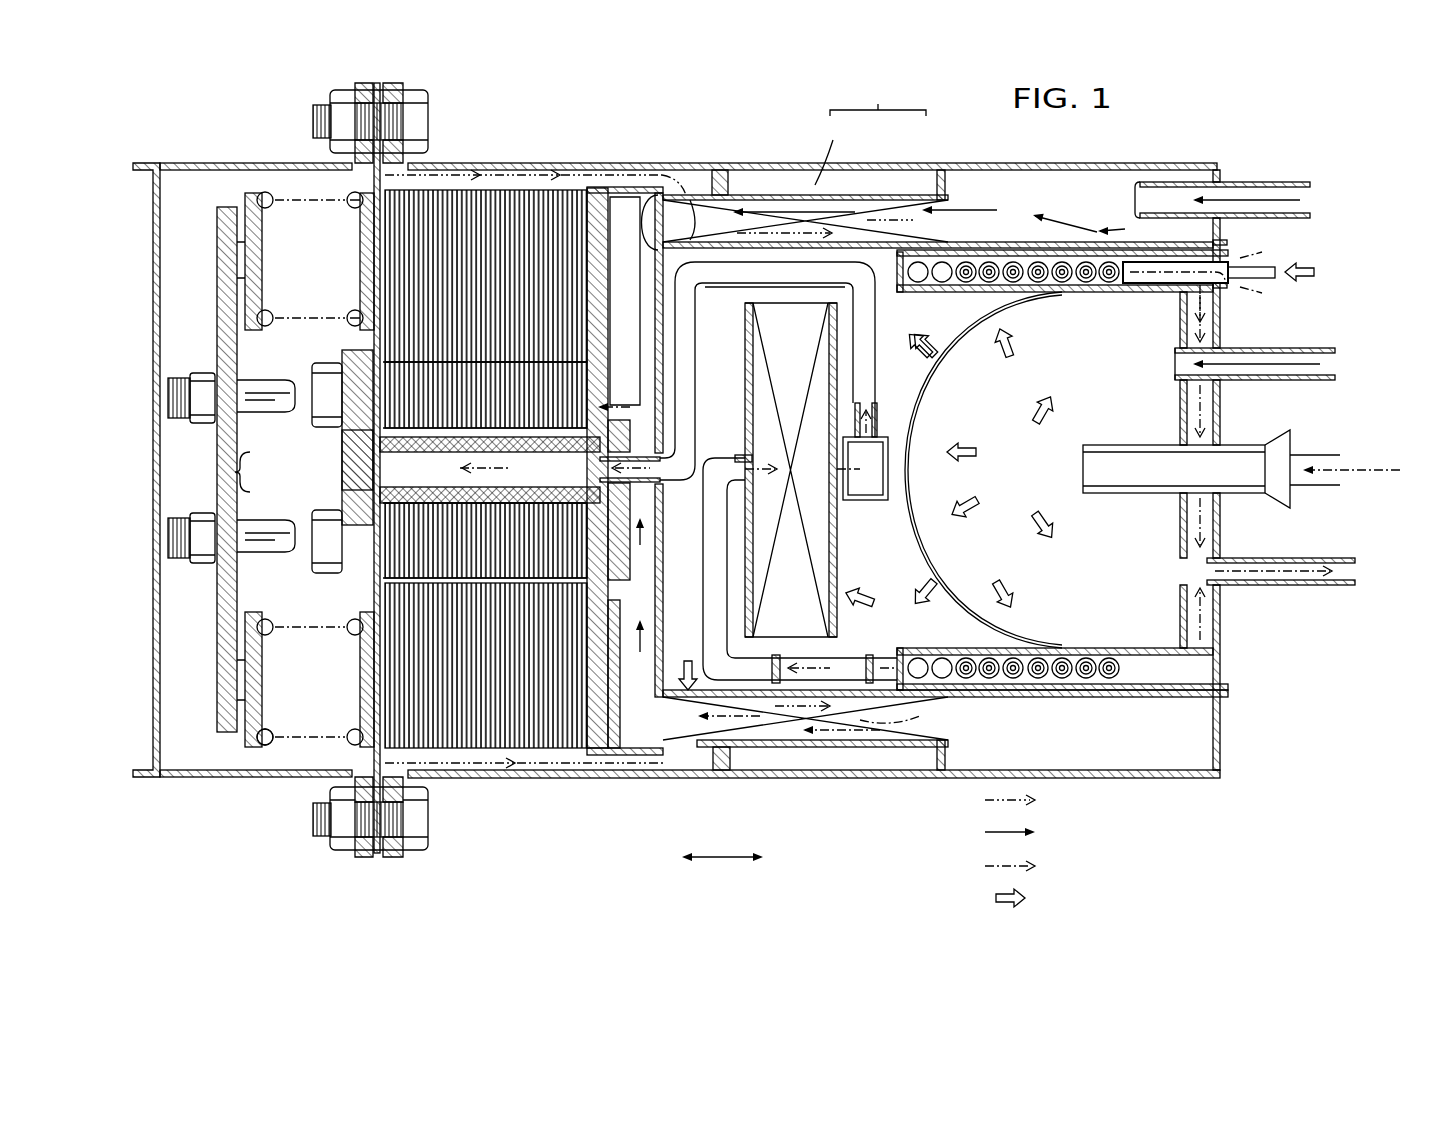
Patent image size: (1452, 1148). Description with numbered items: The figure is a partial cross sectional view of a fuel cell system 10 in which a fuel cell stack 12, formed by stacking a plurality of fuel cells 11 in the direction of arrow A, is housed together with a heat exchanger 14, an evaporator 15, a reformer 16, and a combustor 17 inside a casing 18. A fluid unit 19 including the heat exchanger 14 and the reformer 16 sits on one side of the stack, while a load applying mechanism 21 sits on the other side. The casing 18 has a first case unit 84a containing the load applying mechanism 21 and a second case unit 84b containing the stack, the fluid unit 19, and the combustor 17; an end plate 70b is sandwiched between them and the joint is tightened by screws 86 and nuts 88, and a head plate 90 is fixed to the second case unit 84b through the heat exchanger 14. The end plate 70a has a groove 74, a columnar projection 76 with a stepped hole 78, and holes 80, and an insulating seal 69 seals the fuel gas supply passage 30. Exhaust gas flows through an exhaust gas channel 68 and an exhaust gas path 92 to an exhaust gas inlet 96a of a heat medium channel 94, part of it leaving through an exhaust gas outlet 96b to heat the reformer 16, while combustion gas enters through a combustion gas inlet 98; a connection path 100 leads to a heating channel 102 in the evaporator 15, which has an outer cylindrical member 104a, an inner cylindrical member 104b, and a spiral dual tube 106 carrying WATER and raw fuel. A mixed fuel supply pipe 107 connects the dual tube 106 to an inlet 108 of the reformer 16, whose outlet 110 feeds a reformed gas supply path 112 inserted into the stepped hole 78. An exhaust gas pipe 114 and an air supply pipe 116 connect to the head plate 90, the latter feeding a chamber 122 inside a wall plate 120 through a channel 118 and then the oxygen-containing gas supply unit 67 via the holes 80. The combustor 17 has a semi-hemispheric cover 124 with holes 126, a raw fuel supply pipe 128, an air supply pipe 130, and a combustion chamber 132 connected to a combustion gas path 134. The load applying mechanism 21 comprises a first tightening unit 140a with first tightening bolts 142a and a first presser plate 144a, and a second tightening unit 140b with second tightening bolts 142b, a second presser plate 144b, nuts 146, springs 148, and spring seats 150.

The fuel cell system 10 is at (1212, 107).
The fuel cells 11 is at (432, 770).
The fuel cell stack 12 is at (486, 182).
The heat exchanger 14 is at (833, 152).
The evaporator 15 is at (1027, 248).
The reformer 16 is at (822, 296).
The combustor 17 is at (1195, 330).
The casing 18 is at (243, 792).
The fluid unit 19 is at (878, 98).
The load applying mechanism 21 is at (227, 472).
The fuel gas supply passage 30 is at (372, 460).
The oxygen-containing gas supply unit 67 is at (362, 280).
The exhaust gas channel 68 is at (562, 172).
The insulating seal 69 is at (405, 476).
The end plate 70a is at (600, 716).
The end plate 70b is at (372, 760).
The groove 74 is at (603, 757).
The columnar projection 76 is at (600, 522).
The stepped hole 78 is at (598, 466).
The holes 80 is at (610, 392).
The first case unit 84a is at (188, 162).
The second case unit 84b is at (440, 162).
The screws 86 is at (430, 108).
The nuts 88 is at (318, 120).
The head plate 90 is at (1218, 632).
The exhaust gas path 92 is at (665, 170).
The heat medium channel 94 is at (767, 162).
The exhaust gas inlet 96a is at (690, 228).
The exhaust gas outlet 96b is at (650, 215).
The combustion gas inlet 98 is at (660, 686).
The connection path 100 is at (942, 224).
The heating channel 102 is at (1150, 255).
The outer cylindrical member 104a is at (1138, 692).
The inner cylindrical member 104b is at (1152, 646).
The dual tube 106 is at (1062, 680).
The mixed fuel supply pipe 107 is at (876, 664).
The inlet 108 is at (726, 456).
The outlet 110 is at (862, 502).
The reformed gas supply path 112 is at (862, 312).
The exhaust gas pipe 114 is at (1282, 557).
The air supply pipe 116 is at (1262, 181).
The channel 118 is at (830, 748).
The wall plate 120 is at (648, 606).
The chamber 122 is at (605, 628).
The cover 124 is at (1188, 535).
The holes 126 is at (945, 585).
The raw fuel supply pipe 128 is at (1318, 456).
The air supply pipe 130 is at (1302, 347).
The combustion chamber 132 is at (1190, 418).
The combustion gas path 134 is at (870, 590).
The first tightening unit 140a is at (340, 472).
The second tightening unit 140b is at (248, 555).
The first tightening bolts 142a is at (322, 364).
The second tightening bolts 142b is at (182, 423).
The first presser plate 144a is at (350, 442).
The second presser plate 144b is at (218, 305).
The nuts 146 is at (190, 360).
The springs 148 is at (268, 730).
The spring seats 150 is at (245, 740).
The water supply WATER is at (1258, 272).